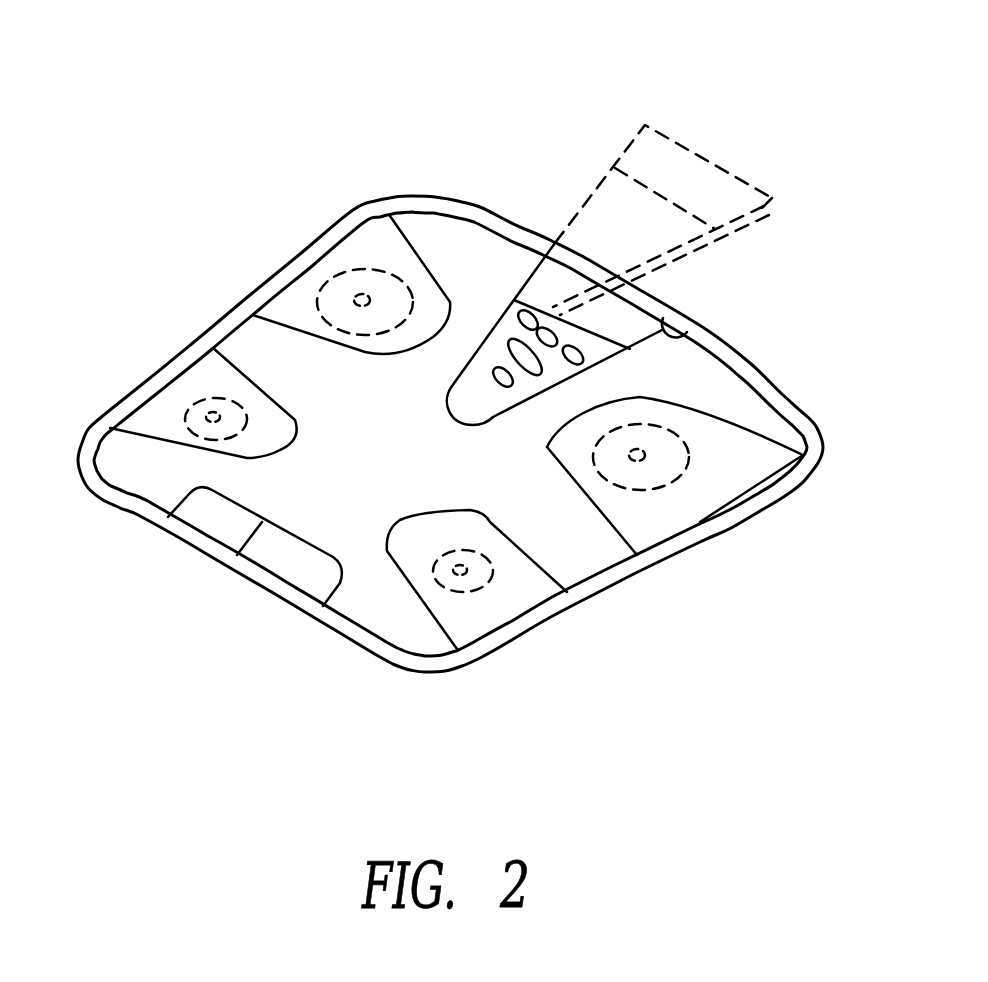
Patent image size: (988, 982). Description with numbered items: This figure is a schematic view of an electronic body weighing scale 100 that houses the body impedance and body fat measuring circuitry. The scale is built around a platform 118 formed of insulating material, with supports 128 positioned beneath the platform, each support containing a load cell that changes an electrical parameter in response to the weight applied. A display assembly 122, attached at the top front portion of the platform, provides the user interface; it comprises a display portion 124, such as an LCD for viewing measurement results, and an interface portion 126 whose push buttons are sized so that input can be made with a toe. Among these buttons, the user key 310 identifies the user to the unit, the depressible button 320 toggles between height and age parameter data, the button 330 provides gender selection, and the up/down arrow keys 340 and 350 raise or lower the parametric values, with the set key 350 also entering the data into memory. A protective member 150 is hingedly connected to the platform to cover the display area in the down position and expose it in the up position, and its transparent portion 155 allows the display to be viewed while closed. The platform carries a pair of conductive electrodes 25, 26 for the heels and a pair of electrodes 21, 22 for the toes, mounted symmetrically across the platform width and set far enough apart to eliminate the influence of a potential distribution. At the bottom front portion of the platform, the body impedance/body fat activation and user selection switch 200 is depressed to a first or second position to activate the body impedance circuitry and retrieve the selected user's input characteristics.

The electronic body weighing scale 100 is at (461, 401).
The platform 118 is at (369, 414).
The supports 128 is at (735, 522).
The electrode 21 is at (362, 296).
The electrode 22 is at (644, 457).
The electrode 25 is at (213, 424).
The electrode 26 is at (470, 567).
The body impedance/body fat activation and user selection switch 200 is at (286, 511).
The display portion 124 is at (652, 328).
The interface portion 126 is at (504, 412).
The display assembly 122 is at (698, 333).
The user key 310 is at (540, 312).
The depressible button 320 is at (529, 312).
The button 330 is at (585, 356).
The up/down arrow key 340 is at (537, 372).
The set key 350 is at (508, 388).
The protective member 150 is at (690, 177).
The transparent portion 155 is at (710, 201).